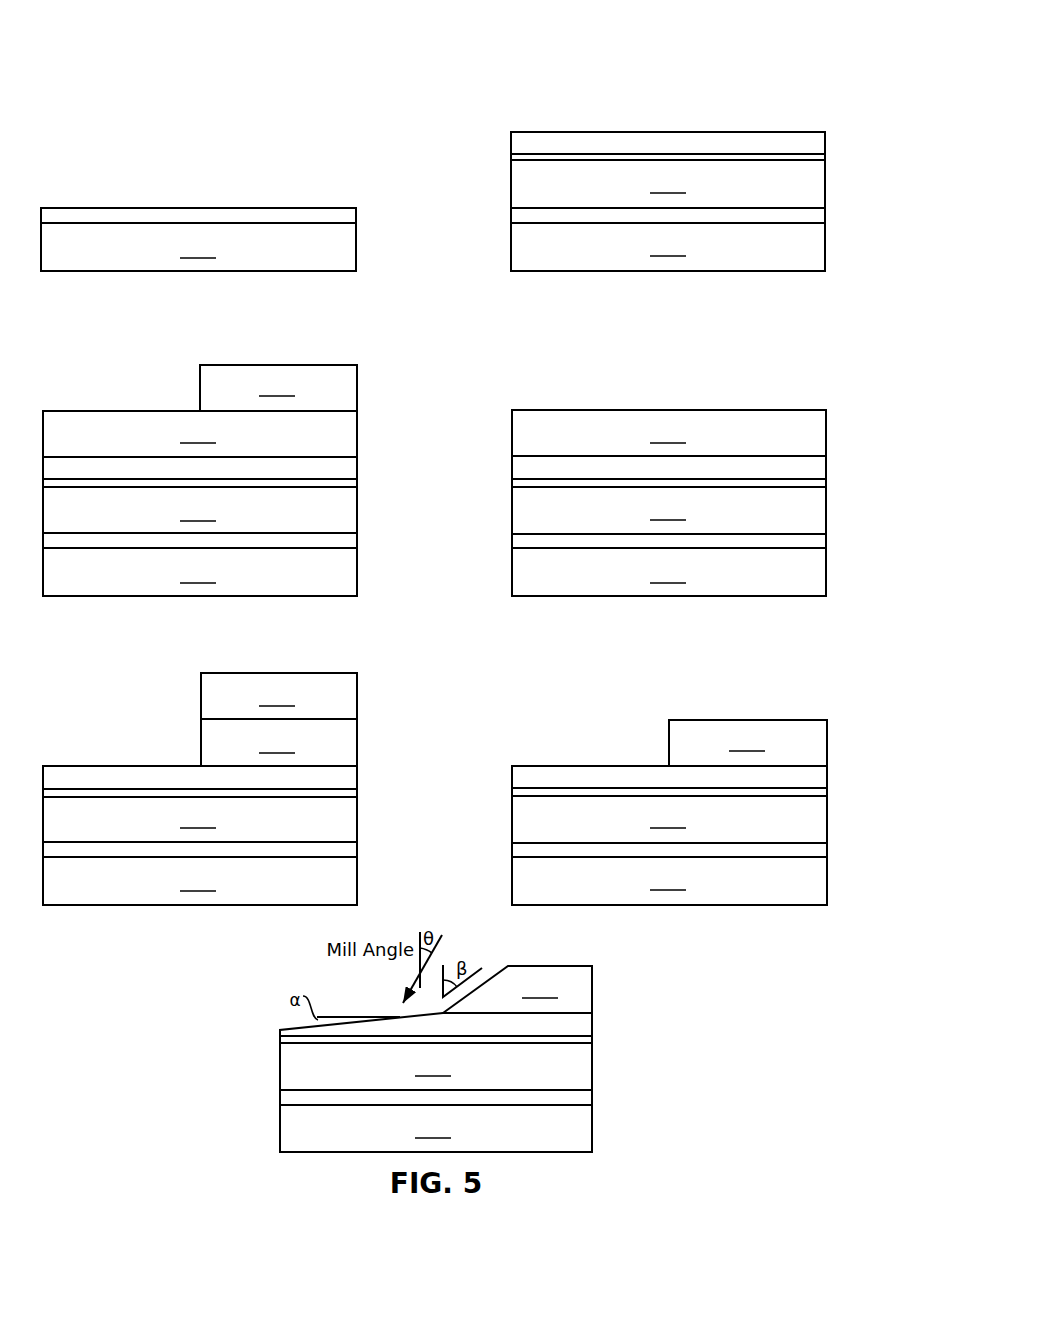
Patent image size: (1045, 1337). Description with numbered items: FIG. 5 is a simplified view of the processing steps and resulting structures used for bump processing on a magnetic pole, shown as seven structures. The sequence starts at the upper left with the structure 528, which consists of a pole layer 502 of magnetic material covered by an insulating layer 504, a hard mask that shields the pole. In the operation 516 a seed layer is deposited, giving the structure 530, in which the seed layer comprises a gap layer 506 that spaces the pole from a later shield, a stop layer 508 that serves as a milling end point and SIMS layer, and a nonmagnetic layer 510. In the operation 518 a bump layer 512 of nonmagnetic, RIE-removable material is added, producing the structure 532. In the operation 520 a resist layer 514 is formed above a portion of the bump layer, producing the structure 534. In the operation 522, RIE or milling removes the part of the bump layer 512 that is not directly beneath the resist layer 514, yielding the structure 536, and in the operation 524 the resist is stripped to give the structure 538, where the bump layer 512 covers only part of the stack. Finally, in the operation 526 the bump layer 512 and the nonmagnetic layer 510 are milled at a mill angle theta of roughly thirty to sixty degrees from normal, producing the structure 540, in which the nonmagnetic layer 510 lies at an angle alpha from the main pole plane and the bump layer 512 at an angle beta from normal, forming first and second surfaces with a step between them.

The pole layer 502 is at (434, 687).
The insulating layer 504 is at (230, 207).
The gap layer 506 is at (435, 625).
The stop layer 508 is at (511, 157).
The nonmagnetic layer 510 is at (511, 143).
The bump layer 512 is at (435, 711).
The resist layer 514 is at (278, 542).
The operation 516 is at (385, 247).
The operation 518 is at (668, 385).
The operation 520 is at (482, 572).
The operation 522 is at (200, 655).
The operation 524 is at (480, 880).
The operation 526 is at (640, 997).
The structure 528 is at (276, 106).
The structure 530 is at (744, 105).
The structure 532 is at (744, 384).
The structure 534 is at (124, 386).
The structure 536 is at (124, 693).
The structure 538 is at (744, 693).
The structure 540 is at (246, 1001).